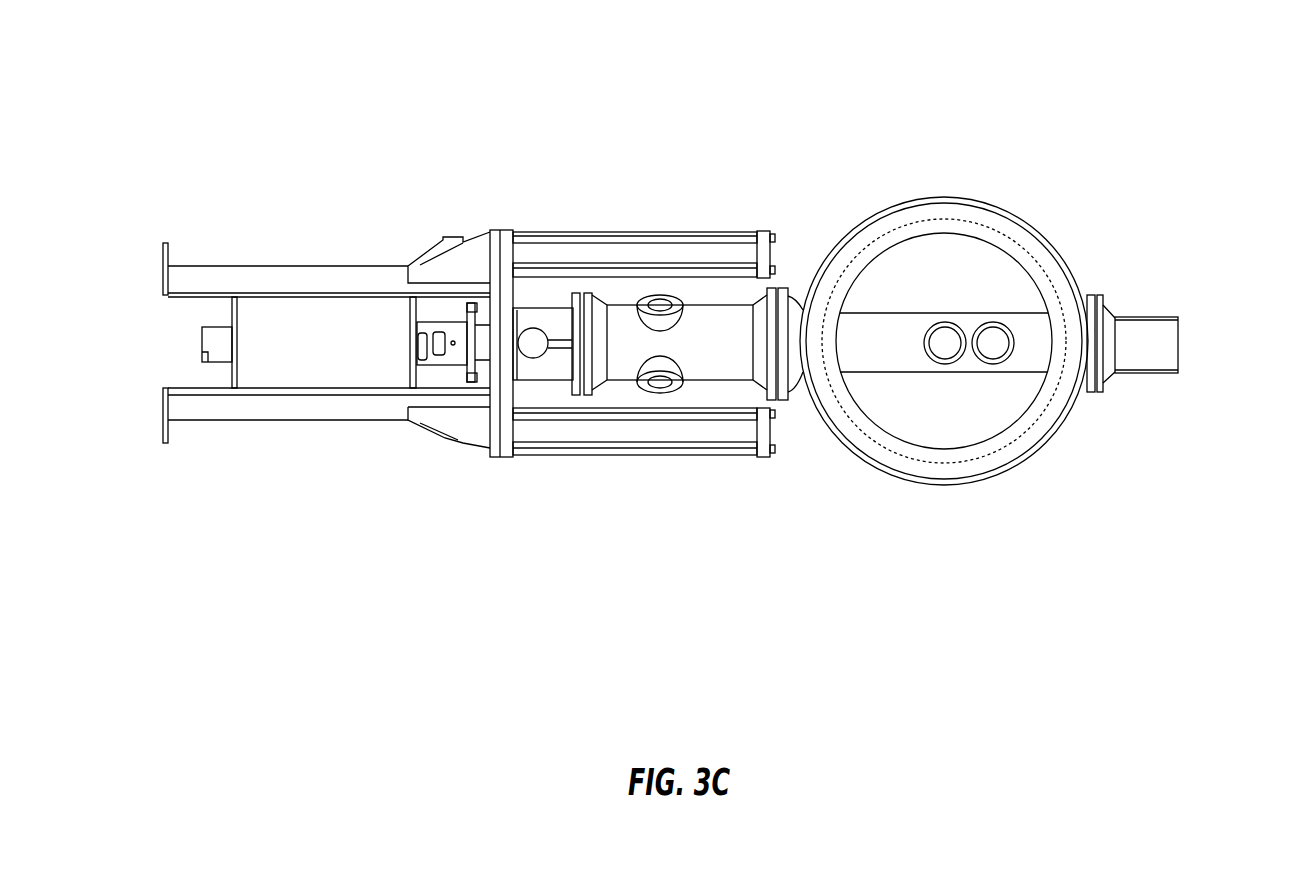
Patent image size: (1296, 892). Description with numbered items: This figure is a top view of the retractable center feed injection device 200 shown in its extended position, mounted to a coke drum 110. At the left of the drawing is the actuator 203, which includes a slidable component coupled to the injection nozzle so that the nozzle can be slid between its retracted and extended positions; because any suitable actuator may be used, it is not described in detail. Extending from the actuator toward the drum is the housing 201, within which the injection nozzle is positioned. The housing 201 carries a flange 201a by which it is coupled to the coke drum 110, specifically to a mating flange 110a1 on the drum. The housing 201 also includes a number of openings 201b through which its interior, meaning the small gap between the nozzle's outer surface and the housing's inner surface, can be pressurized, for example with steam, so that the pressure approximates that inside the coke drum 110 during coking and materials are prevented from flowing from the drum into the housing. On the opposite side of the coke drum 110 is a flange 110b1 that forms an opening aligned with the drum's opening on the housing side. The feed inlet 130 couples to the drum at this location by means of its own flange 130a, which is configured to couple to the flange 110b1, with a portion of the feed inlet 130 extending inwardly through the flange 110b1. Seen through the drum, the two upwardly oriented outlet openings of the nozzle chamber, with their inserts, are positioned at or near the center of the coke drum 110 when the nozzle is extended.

The retractable center feed injection device 200 is at (318, 122).
The actuator 203 is at (308, 420).
The housing 201 is at (717, 303).
The openings 201b is at (647, 373).
The flange 201a is at (777, 287).
The flange 110a1 is at (783, 287).
The coke drum 110 is at (945, 197).
The flange 110b1 is at (1089, 393).
The flange 130a is at (1100, 297).
The feed inlet 130 is at (1172, 317).